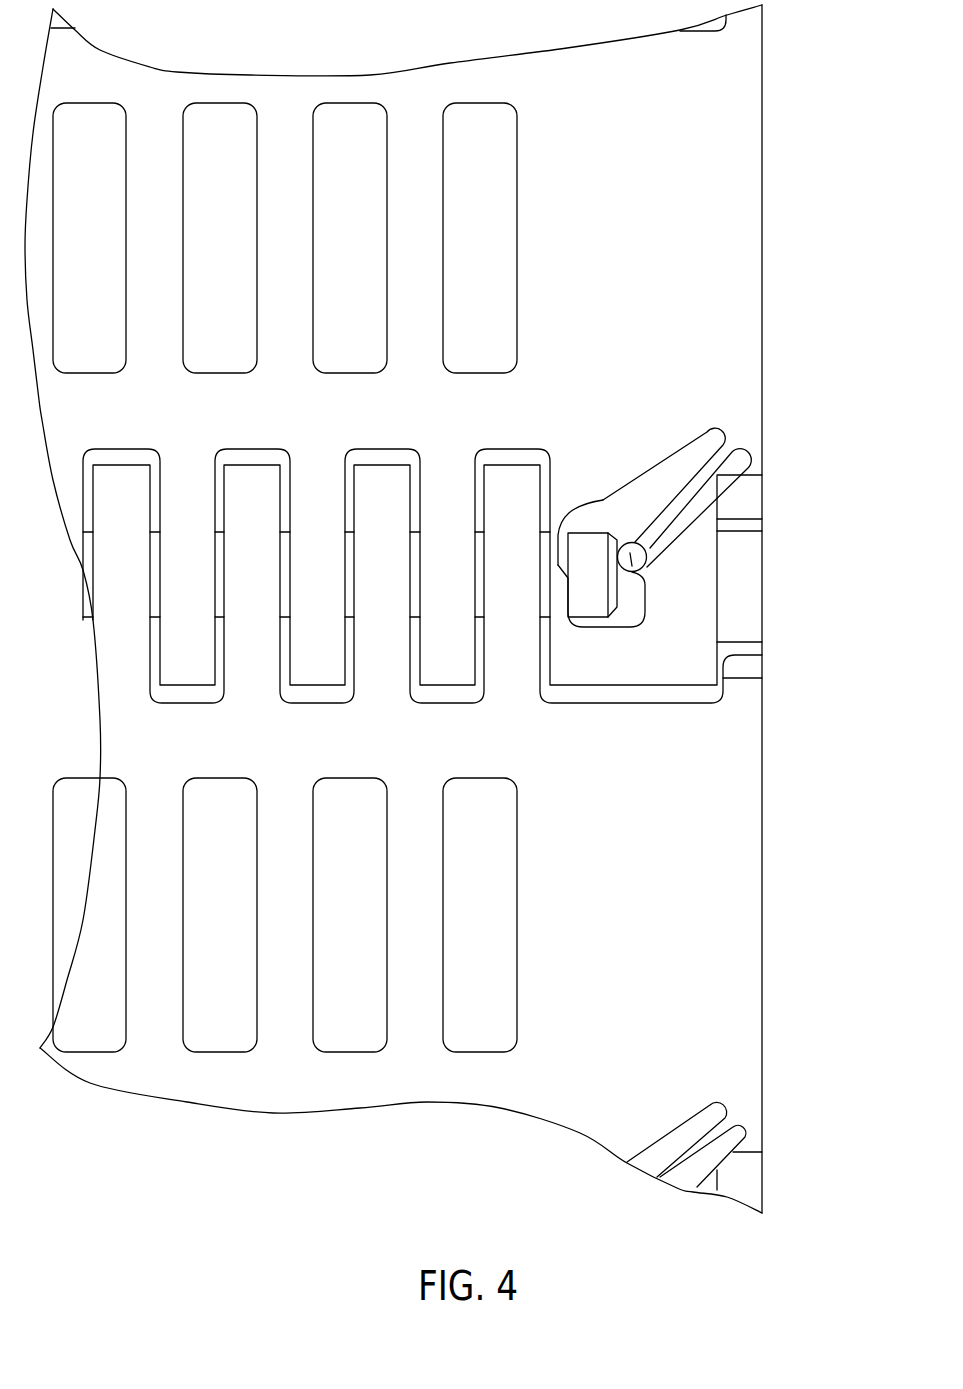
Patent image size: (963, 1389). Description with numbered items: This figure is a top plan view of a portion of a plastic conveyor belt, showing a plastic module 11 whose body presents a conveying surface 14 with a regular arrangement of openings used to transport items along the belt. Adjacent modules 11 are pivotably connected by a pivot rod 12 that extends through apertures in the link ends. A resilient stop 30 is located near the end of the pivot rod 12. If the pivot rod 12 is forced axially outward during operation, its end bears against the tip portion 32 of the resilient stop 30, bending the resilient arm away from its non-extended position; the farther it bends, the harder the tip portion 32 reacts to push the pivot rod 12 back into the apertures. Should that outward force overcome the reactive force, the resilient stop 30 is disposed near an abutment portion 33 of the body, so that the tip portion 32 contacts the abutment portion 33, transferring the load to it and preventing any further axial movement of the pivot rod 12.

The plastic module 11 is at (738, 133).
The pivot rod 12 is at (593, 605).
The conveying surface 14 is at (655, 250).
The resilient stop 30 is at (702, 468).
The tip portion 32 is at (645, 595).
The abutment portion 33 is at (650, 565).